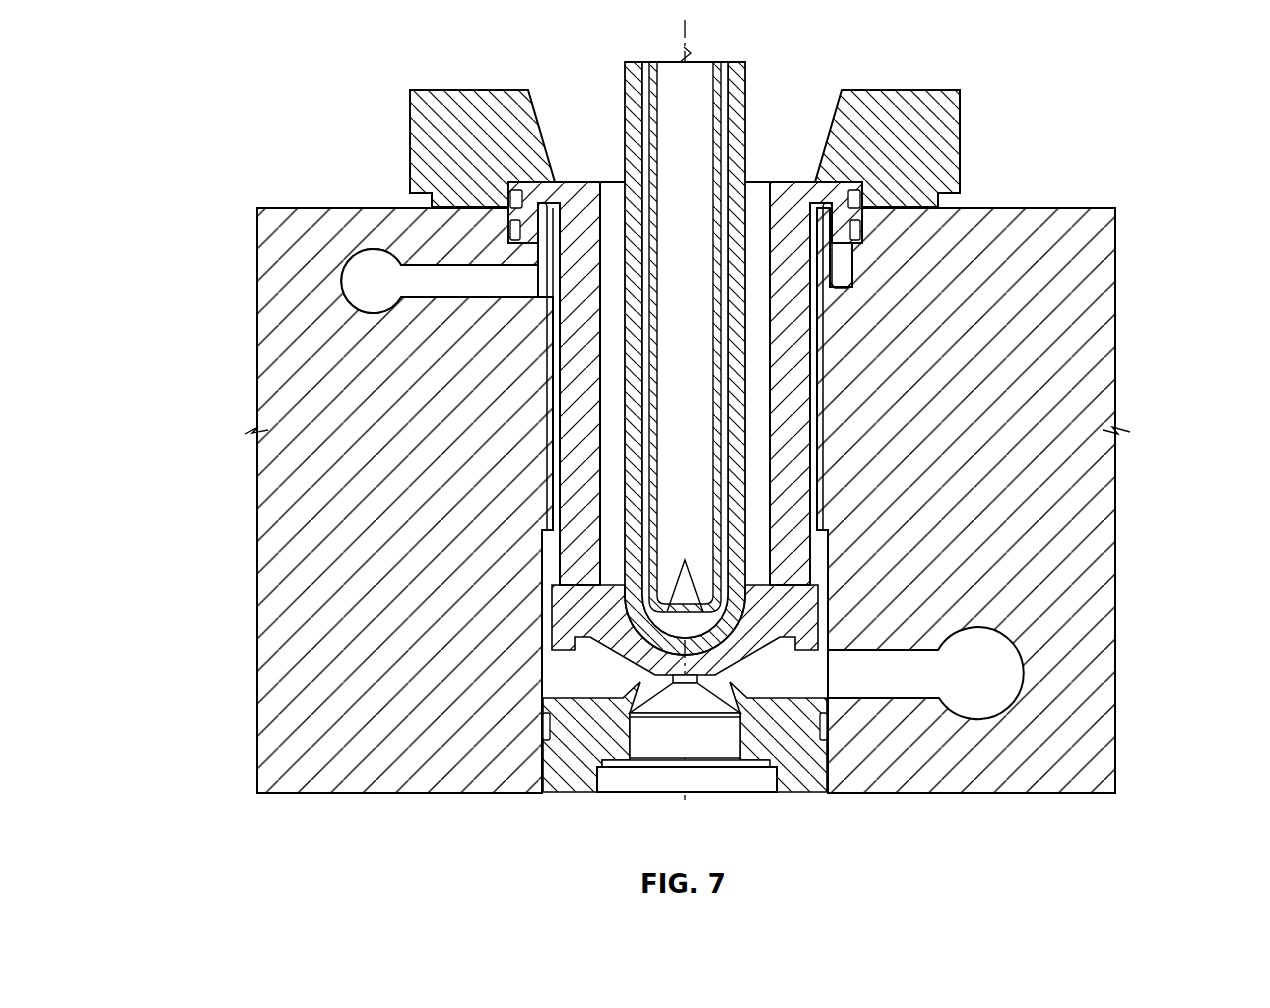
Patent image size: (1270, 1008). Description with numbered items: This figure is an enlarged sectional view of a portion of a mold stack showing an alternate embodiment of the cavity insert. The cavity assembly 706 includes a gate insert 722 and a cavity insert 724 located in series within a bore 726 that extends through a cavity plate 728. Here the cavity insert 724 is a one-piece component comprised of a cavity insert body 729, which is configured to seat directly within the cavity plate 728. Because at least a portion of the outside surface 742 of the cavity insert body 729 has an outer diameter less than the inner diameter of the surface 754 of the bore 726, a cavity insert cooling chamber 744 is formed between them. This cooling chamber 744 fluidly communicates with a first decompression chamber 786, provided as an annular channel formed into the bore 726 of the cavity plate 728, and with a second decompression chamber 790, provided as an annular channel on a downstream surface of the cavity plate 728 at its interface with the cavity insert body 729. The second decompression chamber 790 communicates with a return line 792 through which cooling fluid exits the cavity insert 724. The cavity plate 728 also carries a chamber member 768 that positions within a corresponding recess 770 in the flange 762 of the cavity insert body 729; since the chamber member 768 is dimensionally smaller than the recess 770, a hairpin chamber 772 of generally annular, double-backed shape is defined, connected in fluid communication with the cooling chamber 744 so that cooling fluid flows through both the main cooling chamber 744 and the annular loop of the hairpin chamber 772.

The cavity assembly 706 is at (197, 740).
The gate insert 722 is at (575, 768).
The cavity insert 724 is at (793, 400).
The bore 726 is at (800, 450).
The cavity plate 728 is at (1080, 340).
The cavity insert body 729 is at (577, 510).
The outside surface 742 is at (562, 463).
The cavity insert cooling chamber 744 is at (557, 362).
The surface 754 is at (565, 418).
The flange 762 is at (568, 192).
The chamber member 768 is at (823, 228).
The recess 770 is at (855, 225).
The hairpin chamber 772 is at (817, 203).
The first decompression chamber 786 is at (830, 535).
The second decompression chamber 790 is at (840, 267).
The return line 792 is at (485, 278).